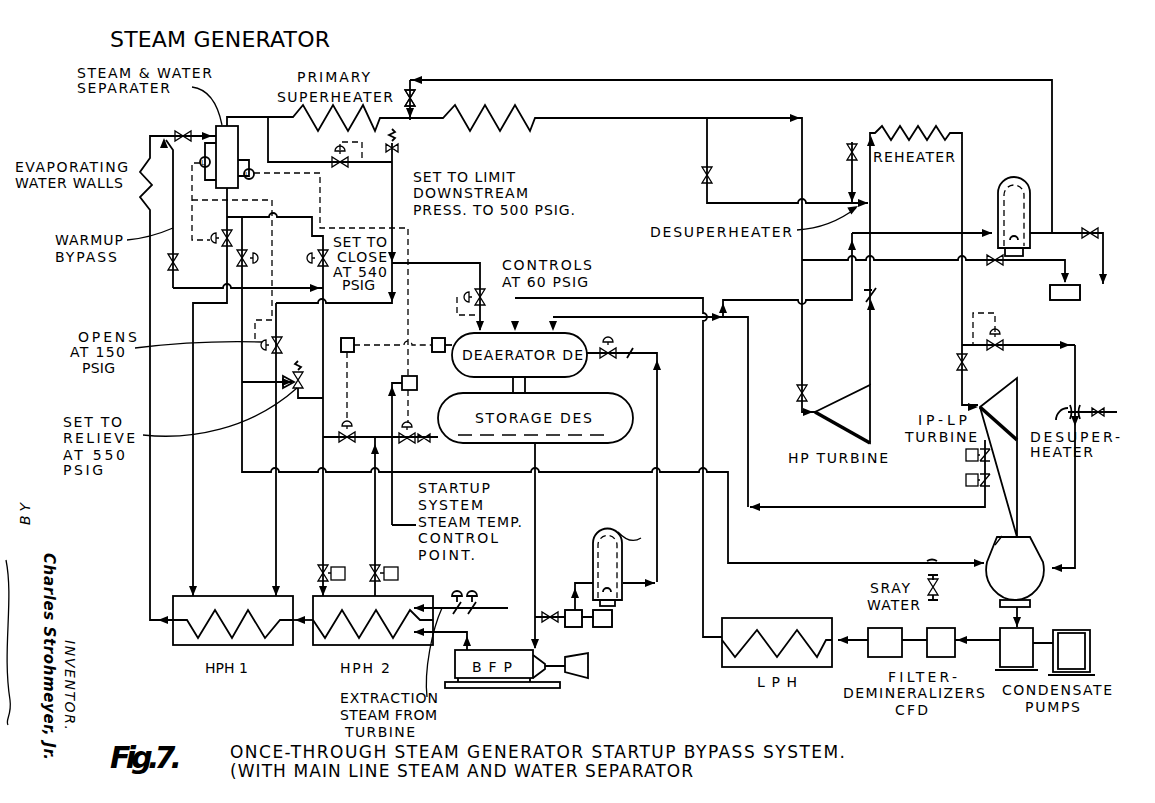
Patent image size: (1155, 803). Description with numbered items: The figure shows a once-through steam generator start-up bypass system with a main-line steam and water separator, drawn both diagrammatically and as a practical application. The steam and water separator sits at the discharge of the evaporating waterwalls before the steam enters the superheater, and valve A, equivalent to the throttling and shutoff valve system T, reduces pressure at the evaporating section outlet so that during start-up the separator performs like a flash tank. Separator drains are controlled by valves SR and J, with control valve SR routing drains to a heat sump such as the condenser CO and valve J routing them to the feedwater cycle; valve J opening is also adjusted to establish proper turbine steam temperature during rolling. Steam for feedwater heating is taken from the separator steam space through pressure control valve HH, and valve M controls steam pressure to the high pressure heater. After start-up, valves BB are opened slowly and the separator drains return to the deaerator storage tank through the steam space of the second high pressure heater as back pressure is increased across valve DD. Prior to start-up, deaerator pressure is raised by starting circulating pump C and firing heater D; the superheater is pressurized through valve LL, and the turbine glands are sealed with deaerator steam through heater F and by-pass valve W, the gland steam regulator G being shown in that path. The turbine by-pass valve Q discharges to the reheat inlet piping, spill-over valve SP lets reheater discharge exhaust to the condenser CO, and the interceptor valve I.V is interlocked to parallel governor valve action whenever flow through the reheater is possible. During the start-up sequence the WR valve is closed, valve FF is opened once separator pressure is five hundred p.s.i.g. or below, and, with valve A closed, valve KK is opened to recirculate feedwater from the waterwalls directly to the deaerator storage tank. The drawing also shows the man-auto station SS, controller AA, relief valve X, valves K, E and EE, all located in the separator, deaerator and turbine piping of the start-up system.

The throttling and shutoff valve A is at (184, 143).
The warmup bypass valve KK is at (187, 262).
The WR valve WR is at (212, 231).
The separator drain control valve SR is at (257, 269).
The FF valve FF is at (308, 266).
The pressure control valve HH is at (342, 165).
The superheater pressurizing valve LL is at (424, 100).
The manual-automatic station SS is at (362, 330).
The deaerator pressure controller AA is at (435, 336).
The high pressure heater steam pressure valve M is at (280, 346).
The relief valve set at 550 psig X is at (307, 380).
The DD valve DD is at (343, 443).
The separator drain valve J is at (406, 443).
The valve K is at (428, 449).
The deaerator outlet valve E is at (607, 358).
The turbine by-pass valve Q is at (697, 179).
The heater F is at (1038, 128).
The check valve EE is at (883, 297).
The by-pass valve W is at (1087, 226).
The gland steam regulator G is at (1070, 312).
The interceptor valve I.V is at (946, 364).
The spill-over valve SP is at (998, 349).
The throttling and shutoff valve system T is at (989, 467).
The condenser CO is at (952, 567).
The heater D is at (594, 546).
The BB valves BB is at (364, 564).
The circulating pump C is at (621, 639).